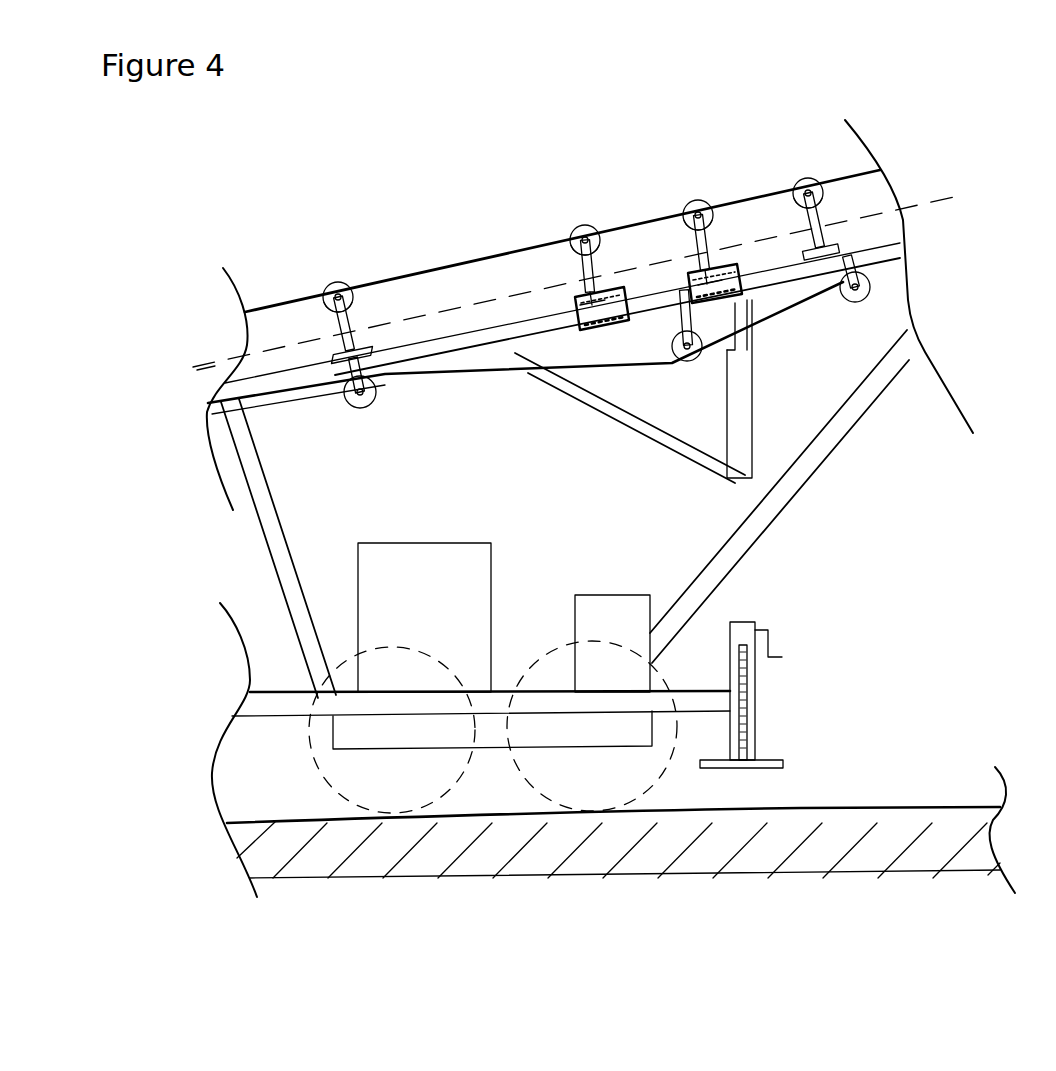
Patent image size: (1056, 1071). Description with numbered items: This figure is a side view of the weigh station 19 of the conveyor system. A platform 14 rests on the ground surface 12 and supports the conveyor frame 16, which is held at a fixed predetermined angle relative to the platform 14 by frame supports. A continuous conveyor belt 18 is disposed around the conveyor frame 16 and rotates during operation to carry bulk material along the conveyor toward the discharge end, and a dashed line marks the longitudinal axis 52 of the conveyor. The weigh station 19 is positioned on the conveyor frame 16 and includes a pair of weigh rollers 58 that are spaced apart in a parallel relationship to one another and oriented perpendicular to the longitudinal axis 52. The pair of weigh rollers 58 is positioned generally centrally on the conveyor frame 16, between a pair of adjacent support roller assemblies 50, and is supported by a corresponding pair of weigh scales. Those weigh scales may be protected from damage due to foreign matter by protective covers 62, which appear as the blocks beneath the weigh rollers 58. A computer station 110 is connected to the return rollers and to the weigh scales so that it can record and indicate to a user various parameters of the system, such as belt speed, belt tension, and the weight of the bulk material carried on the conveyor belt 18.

The ground surface 12 is at (908, 818).
The platform 14 is at (704, 729).
The conveyor frame 16 is at (817, 318).
The conveyor belt 18 is at (862, 176).
The weigh station 19 is at (612, 206).
The support roller assemblies 50 is at (338, 282).
The longitudinal axis 52 is at (209, 357).
The weigh rollers 58 is at (585, 225).
The protective covers 62 is at (575, 297).
The computer station 110 is at (745, 409).